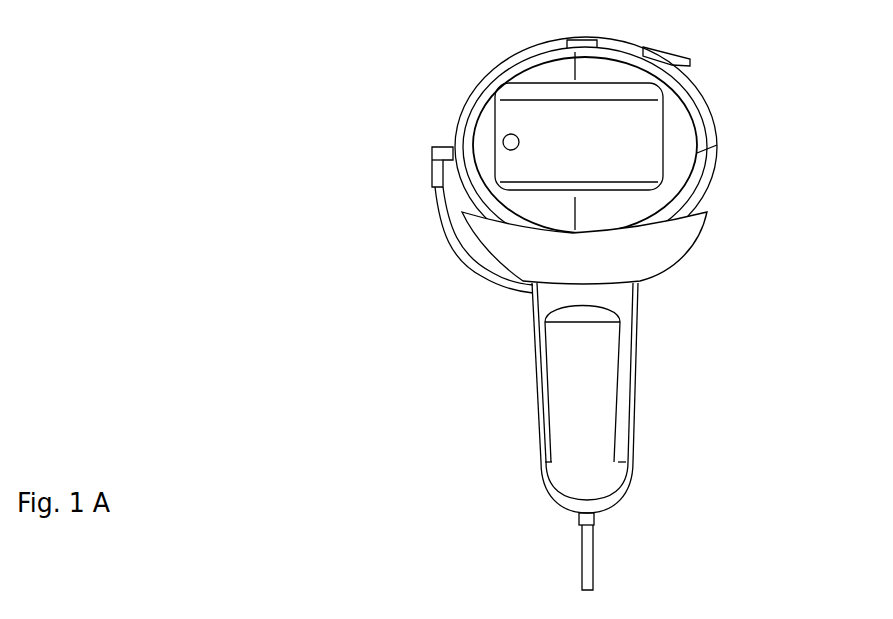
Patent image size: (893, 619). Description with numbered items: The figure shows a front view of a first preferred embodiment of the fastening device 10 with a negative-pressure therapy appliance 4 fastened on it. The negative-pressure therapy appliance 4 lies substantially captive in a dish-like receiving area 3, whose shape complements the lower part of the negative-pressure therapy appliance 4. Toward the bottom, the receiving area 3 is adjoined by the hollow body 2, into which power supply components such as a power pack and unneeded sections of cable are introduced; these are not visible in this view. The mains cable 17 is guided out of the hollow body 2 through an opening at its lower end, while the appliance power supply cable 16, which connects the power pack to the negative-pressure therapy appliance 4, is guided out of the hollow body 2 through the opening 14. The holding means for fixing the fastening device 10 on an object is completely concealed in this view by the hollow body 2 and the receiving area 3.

The hollow body 2 is at (577, 383).
The receiving area 3 is at (642, 240).
The negative-pressure therapy appliance 4 is at (550, 67).
The fastening device 10 is at (262, 405).
The opening 14 is at (530, 282).
The appliance power supply cable 16 is at (453, 247).
The mains cable 17 is at (590, 543).